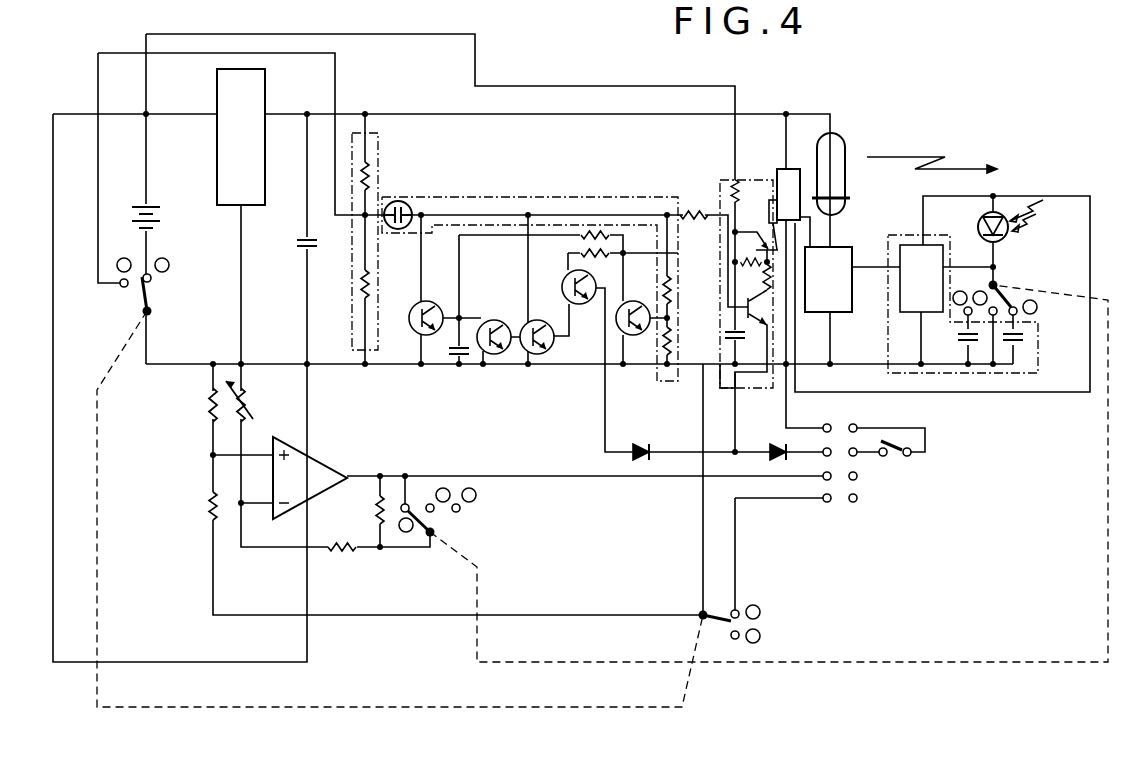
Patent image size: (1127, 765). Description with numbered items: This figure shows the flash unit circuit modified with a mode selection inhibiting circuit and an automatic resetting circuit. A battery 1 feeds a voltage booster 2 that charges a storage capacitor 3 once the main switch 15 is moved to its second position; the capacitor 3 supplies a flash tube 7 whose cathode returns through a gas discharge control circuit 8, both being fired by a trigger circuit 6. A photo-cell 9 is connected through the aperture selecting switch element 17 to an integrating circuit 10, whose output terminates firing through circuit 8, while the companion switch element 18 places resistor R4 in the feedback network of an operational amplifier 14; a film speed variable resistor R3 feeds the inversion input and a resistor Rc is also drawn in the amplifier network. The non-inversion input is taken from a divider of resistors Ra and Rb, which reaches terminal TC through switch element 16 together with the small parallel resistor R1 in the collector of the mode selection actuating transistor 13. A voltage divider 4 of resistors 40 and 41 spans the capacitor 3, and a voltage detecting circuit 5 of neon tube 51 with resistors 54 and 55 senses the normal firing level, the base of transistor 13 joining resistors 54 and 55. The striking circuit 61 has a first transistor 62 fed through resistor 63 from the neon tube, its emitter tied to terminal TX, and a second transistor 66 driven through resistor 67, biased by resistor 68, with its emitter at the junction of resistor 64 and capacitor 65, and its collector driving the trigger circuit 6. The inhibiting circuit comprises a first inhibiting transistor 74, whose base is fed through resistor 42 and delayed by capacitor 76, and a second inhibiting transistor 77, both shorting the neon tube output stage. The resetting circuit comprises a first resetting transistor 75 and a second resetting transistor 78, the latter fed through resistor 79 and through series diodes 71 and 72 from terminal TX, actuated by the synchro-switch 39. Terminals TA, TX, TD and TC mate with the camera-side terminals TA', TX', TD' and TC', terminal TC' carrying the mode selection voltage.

The battery 1 is at (151, 208).
The voltage booster 2 is at (241, 137).
The storage capacitor 3 is at (298, 243).
The voltage divider 4 is at (378, 139).
The voltage detecting circuit 5 is at (487, 197).
The trigger circuit 6 is at (788, 194).
The flash tube 7 is at (831, 174).
The gas discharge control circuit 8 is at (828, 279).
The photo-cell 9 is at (1007, 237).
The integrating circuit 10 is at (1040, 339).
The mode selection actuating transistor 13 is at (638, 302).
The operational amplifier 14 is at (310, 478).
The main switch 15 is at (152, 310).
The switch element 16 is at (700, 612).
The flash aperture selecting switch element 17 is at (1002, 294).
The switch element 18 is at (437, 533).
The synchro-switch 39 is at (897, 458).
The resistor 40 is at (371, 176).
The resistor 41 is at (360, 286).
The resistor 42 is at (590, 230).
The neon tube 51 is at (405, 204).
The resistor 54 is at (673, 285).
The resistor 55 is at (672, 368).
The striking circuit 61 is at (727, 180).
The first transistor 62 is at (768, 318).
The resistor 63 is at (696, 210).
The resistor 64 is at (740, 190).
The capacitor 65 is at (742, 338).
The second transistor 66 is at (765, 240).
The resistor 67 is at (772, 290).
The resistor 68 is at (749, 278).
The diode 71 is at (641, 443).
The diode 72 is at (771, 444).
The first inhibiting transistor 74 is at (430, 302).
The first resetting transistor 75 is at (496, 320).
The capacitor 76 is at (449, 355).
The second inhibiting transistor 77 is at (542, 320).
The second resetting transistor 78 is at (566, 275).
The resistor 79 is at (598, 257).
The resistor Ra is at (195, 405).
The resistor Rb is at (195, 506).
The resistor Rc is at (341, 564).
The resistor R1 is at (685, 337).
The film speed setting variable resistor R3 is at (254, 401).
The resistor R4 is at (363, 510).
The terminal TA is at (816, 428).
The interconnection terminal TX is at (816, 452).
The terminal TD is at (816, 476).
The interconnection terminal TC is at (816, 498).
The terminal TA' is at (843, 428).
The terminal TX' is at (843, 452).
The terminal TD' is at (842, 476).
The interconnection terminal TC' is at (843, 498).